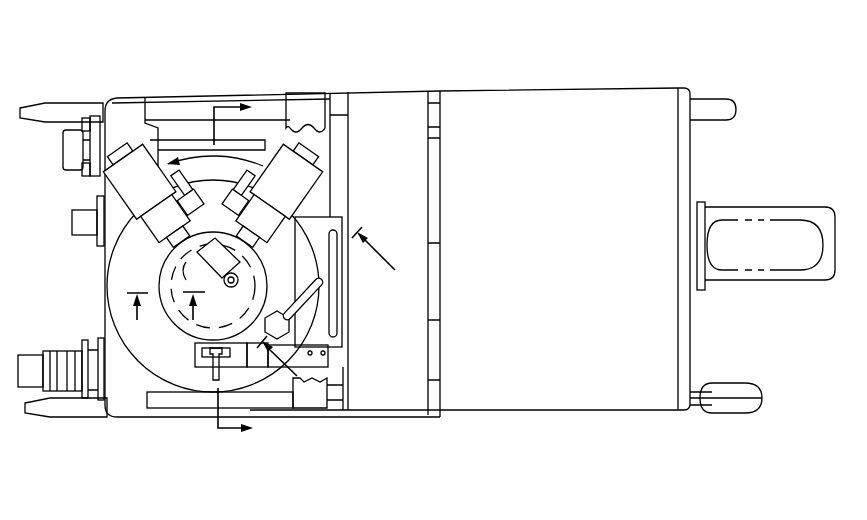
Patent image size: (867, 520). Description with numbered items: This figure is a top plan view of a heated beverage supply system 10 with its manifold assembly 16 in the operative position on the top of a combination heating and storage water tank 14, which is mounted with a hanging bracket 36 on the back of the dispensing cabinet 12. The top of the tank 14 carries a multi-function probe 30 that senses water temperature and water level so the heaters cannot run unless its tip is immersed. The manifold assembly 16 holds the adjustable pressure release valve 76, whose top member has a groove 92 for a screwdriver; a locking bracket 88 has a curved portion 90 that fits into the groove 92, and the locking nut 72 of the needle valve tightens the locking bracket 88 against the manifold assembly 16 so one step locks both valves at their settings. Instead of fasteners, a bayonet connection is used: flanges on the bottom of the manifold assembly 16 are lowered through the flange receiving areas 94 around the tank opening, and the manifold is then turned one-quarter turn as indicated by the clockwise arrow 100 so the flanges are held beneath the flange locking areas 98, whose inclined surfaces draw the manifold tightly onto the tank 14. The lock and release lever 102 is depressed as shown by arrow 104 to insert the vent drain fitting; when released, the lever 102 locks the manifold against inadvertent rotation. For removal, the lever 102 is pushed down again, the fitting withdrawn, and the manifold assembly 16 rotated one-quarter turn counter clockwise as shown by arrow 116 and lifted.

The heated beverage supply system 10 is at (624, 49).
The dispensing cabinet 12 is at (662, 115).
The combination heating and storage water tank 14 is at (123, 266).
The manifold assembly 16 is at (228, 252).
The multi-function probe 30 is at (297, 323).
The hanging bracket 36 is at (315, 230).
The locking nut 72 is at (225, 337).
The pressure release valve 76 is at (213, 252).
The locking bracket 88 is at (190, 278).
The curved portion 90 is at (216, 250).
The groove 92 is at (164, 248).
The flange receiving areas 94 is at (210, 332).
The flange locking areas 98 is at (218, 357).
The clockwise arrow 100 is at (235, 40).
The lock and release lever 102 is at (275, 365).
The arrow 104 is at (250, 397).
The arrow 116 is at (262, 168).